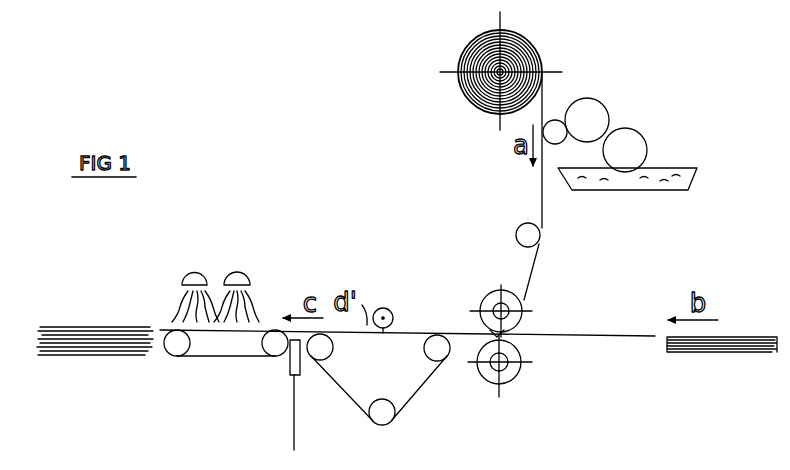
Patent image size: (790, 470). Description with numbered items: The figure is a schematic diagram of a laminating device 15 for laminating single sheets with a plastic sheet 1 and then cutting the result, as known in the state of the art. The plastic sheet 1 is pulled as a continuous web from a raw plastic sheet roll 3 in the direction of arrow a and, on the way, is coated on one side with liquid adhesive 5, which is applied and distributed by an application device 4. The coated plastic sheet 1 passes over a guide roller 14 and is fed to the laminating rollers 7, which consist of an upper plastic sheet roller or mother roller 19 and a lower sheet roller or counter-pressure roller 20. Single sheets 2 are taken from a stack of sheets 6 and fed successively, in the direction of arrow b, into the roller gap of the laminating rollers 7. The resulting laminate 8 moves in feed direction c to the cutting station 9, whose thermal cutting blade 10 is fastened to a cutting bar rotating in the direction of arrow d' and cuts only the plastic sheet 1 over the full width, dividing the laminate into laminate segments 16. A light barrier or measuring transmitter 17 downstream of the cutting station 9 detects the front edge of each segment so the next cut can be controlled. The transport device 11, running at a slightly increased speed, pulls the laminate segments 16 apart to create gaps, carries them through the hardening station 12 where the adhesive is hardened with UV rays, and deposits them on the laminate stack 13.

The plastic sheet 1 is at (541, 205).
The single sheets 2 is at (640, 335).
The raw plastic sheet roll 3 is at (474, 108).
The application device 4 is at (622, 120).
The adhesive 5 is at (680, 168).
The stack of sheets 6 is at (736, 337).
The laminating rollers 7 is at (515, 388).
The laminate 8 is at (462, 332).
The cutting station 9 is at (372, 297).
The cutting blade 10 is at (393, 329).
The transport device 11 is at (210, 347).
The hardening station 12 is at (205, 270).
The laminate stack 13 is at (108, 327).
The guide roller 14 is at (535, 232).
The laminating device 15 is at (450, 234).
The laminate segments 16 is at (262, 328).
The measuring transmitter 17 is at (291, 382).
The mother roller 19 is at (506, 292).
The counter-pressure roller 20 is at (493, 385).